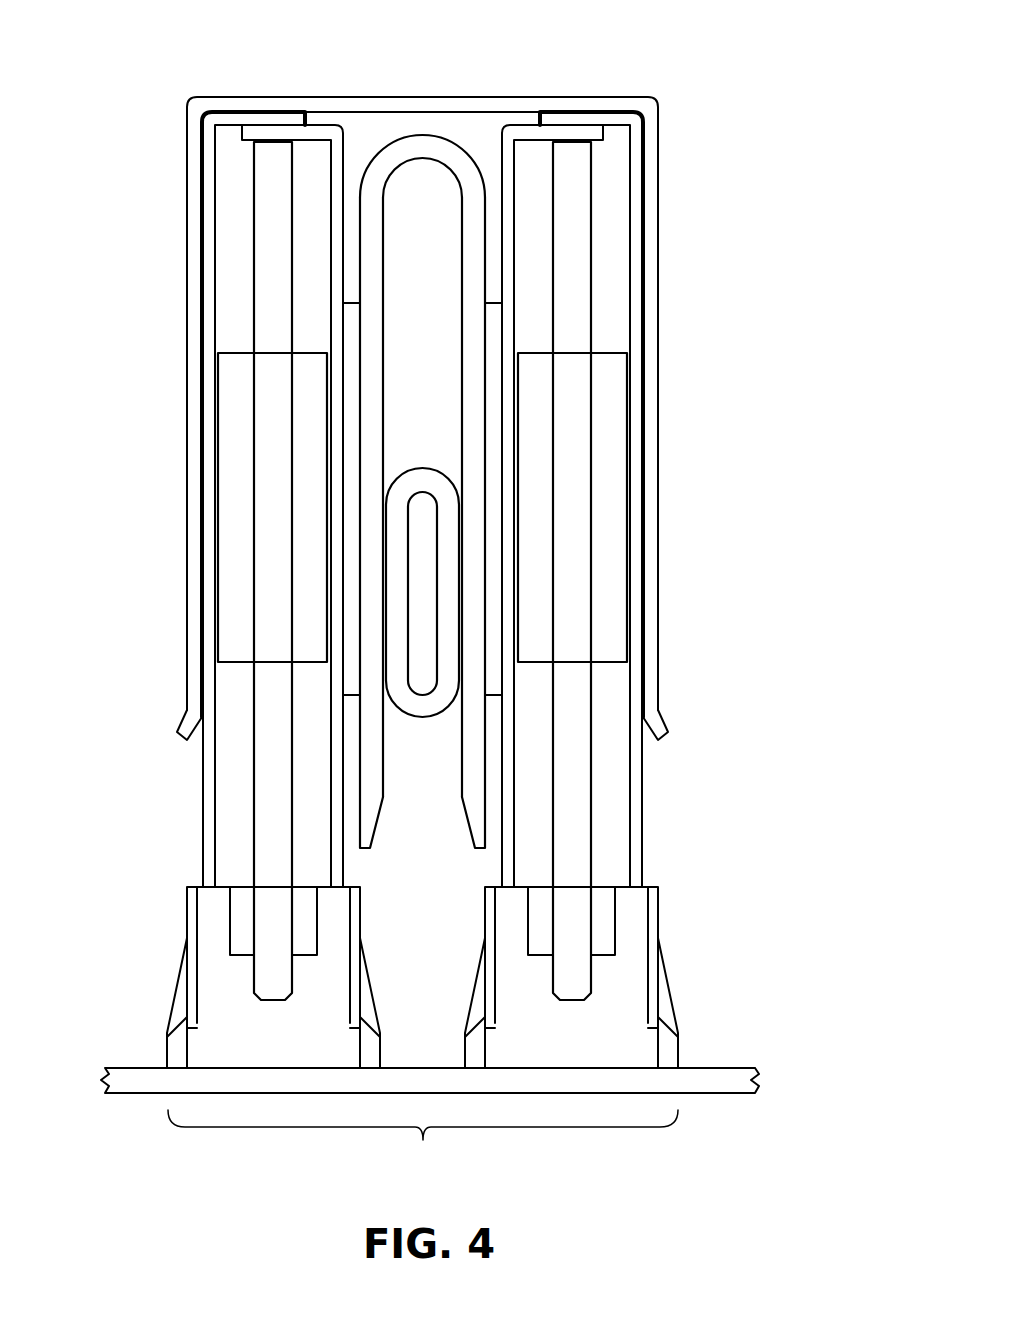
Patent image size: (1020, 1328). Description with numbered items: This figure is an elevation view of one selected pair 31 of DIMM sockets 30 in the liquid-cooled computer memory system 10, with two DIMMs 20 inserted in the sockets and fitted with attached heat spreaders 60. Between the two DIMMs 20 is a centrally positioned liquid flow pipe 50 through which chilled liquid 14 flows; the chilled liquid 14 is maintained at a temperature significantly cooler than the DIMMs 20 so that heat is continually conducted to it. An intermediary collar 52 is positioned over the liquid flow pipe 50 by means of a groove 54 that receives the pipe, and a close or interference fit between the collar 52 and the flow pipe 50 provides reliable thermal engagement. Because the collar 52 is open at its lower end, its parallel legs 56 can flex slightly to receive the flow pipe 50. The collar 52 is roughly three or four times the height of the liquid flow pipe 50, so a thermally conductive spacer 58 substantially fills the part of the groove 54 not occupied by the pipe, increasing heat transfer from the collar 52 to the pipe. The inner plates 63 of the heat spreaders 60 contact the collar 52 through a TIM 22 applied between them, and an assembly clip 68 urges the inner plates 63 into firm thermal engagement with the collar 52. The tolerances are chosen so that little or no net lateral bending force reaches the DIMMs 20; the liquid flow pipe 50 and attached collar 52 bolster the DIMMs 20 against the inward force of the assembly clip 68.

The liquid-cooled computer memory system 10 is at (749, 89).
The chilled liquid 14 is at (439, 554).
The DIMM 20 is at (254, 239).
The TIM 22 is at (494, 451).
The DIMM socket 30 is at (187, 908).
The pair of DIMM sockets 31 is at (423, 1142).
The liquid flow pipe 50 is at (451, 642).
The intermediary collar 52 is at (447, 140).
The groove 54 is at (418, 813).
The parallel legs 56 is at (360, 792).
The spacer 58 is at (436, 353).
The heat spreader 60 is at (280, 97).
The inner plate 63 is at (500, 197).
The assembly clip 68 is at (433, 98).